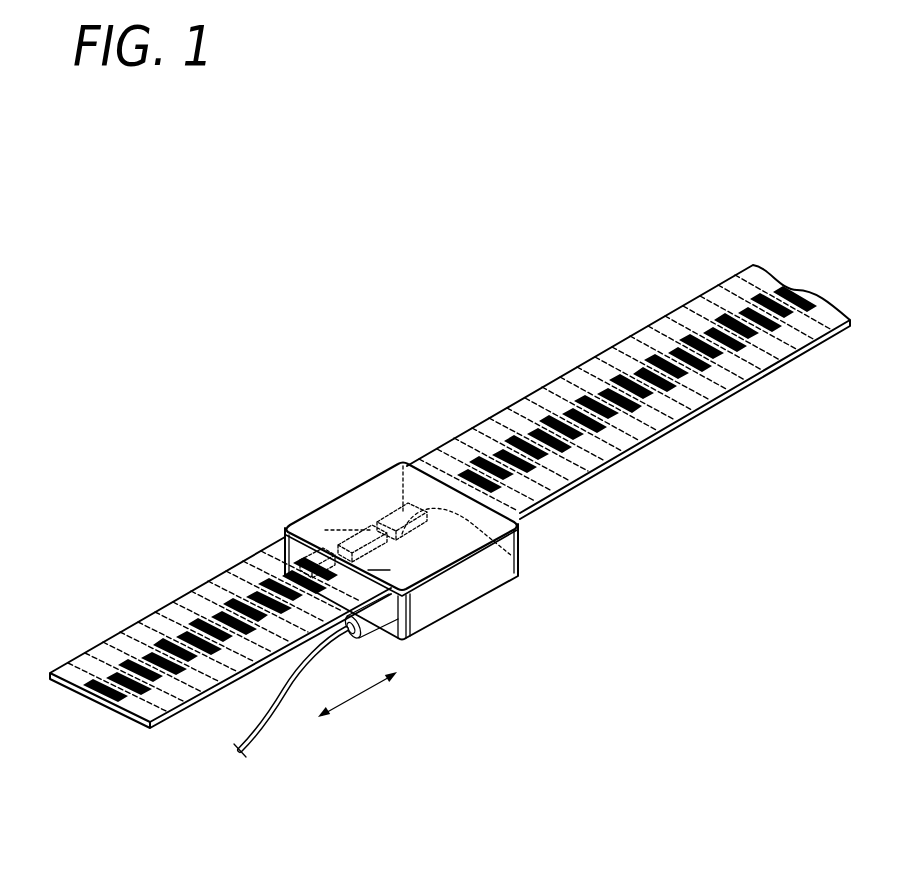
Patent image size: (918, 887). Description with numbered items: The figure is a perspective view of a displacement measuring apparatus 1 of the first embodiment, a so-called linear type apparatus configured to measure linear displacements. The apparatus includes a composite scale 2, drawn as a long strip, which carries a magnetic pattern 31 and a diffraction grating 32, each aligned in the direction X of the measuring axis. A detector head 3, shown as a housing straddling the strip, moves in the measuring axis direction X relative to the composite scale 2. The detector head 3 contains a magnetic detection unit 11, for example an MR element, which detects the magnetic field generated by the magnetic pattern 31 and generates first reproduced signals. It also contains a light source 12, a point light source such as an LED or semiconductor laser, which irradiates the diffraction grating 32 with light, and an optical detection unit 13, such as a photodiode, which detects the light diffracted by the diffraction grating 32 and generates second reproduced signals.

The displacement measuring apparatus 1 is at (641, 275).
The composite scale 2 is at (472, 427).
The detector head 3 is at (458, 592).
The magnetic detection unit 11 is at (520, 542).
The light source 12 is at (340, 520).
The optical detection unit 13 is at (305, 553).
The magnetic pattern 31 is at (165, 597).
The diffraction grating 32 is at (171, 693).